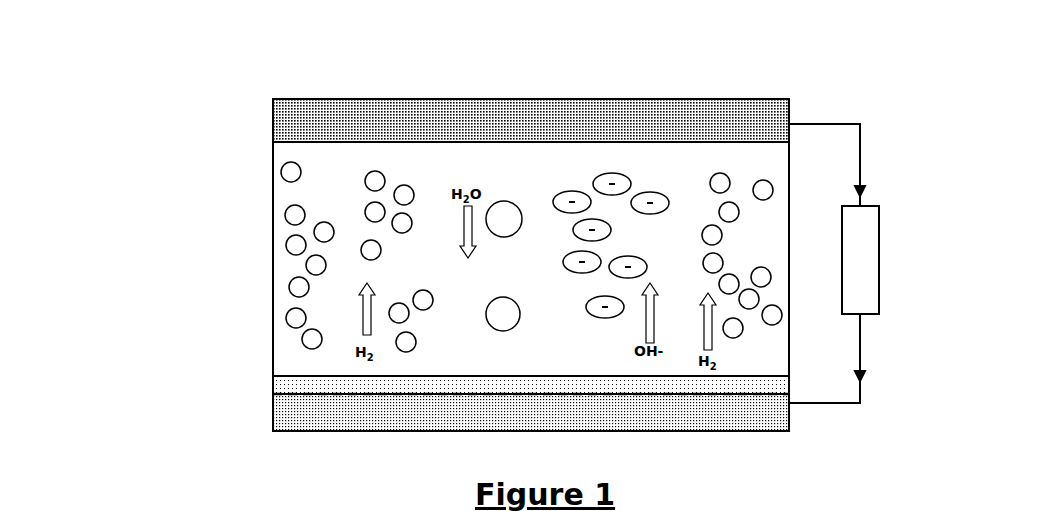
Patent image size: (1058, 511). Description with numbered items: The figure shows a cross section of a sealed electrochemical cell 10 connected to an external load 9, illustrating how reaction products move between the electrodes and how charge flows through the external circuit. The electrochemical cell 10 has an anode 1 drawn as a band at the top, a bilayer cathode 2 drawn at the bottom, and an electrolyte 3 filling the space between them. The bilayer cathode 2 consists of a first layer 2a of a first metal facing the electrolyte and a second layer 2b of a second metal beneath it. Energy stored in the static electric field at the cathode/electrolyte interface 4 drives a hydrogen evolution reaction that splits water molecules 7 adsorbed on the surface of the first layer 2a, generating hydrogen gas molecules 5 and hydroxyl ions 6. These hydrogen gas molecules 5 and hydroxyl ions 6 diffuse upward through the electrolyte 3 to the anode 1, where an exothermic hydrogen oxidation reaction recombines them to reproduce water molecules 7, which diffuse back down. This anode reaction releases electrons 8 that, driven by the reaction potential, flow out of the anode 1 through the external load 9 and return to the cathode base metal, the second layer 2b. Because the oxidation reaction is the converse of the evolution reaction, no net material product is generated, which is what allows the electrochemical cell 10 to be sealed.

The electrochemical cell 10 is at (255, 192).
The anode 1 is at (284, 122).
The bilayer cathode 2 is at (766, 416).
The first layer 2a is at (284, 386).
The second layer 2b is at (292, 422).
The electrolyte 3 is at (528, 174).
The cathode/electrolyte interface 4 is at (774, 368).
The hydrogen gas molecules 5 is at (531, 261).
The hydroxyl ions 6 is at (611, 263).
The water molecules 7 is at (486, 276).
The electrons 8 is at (882, 140).
The external load 9 is at (885, 271).